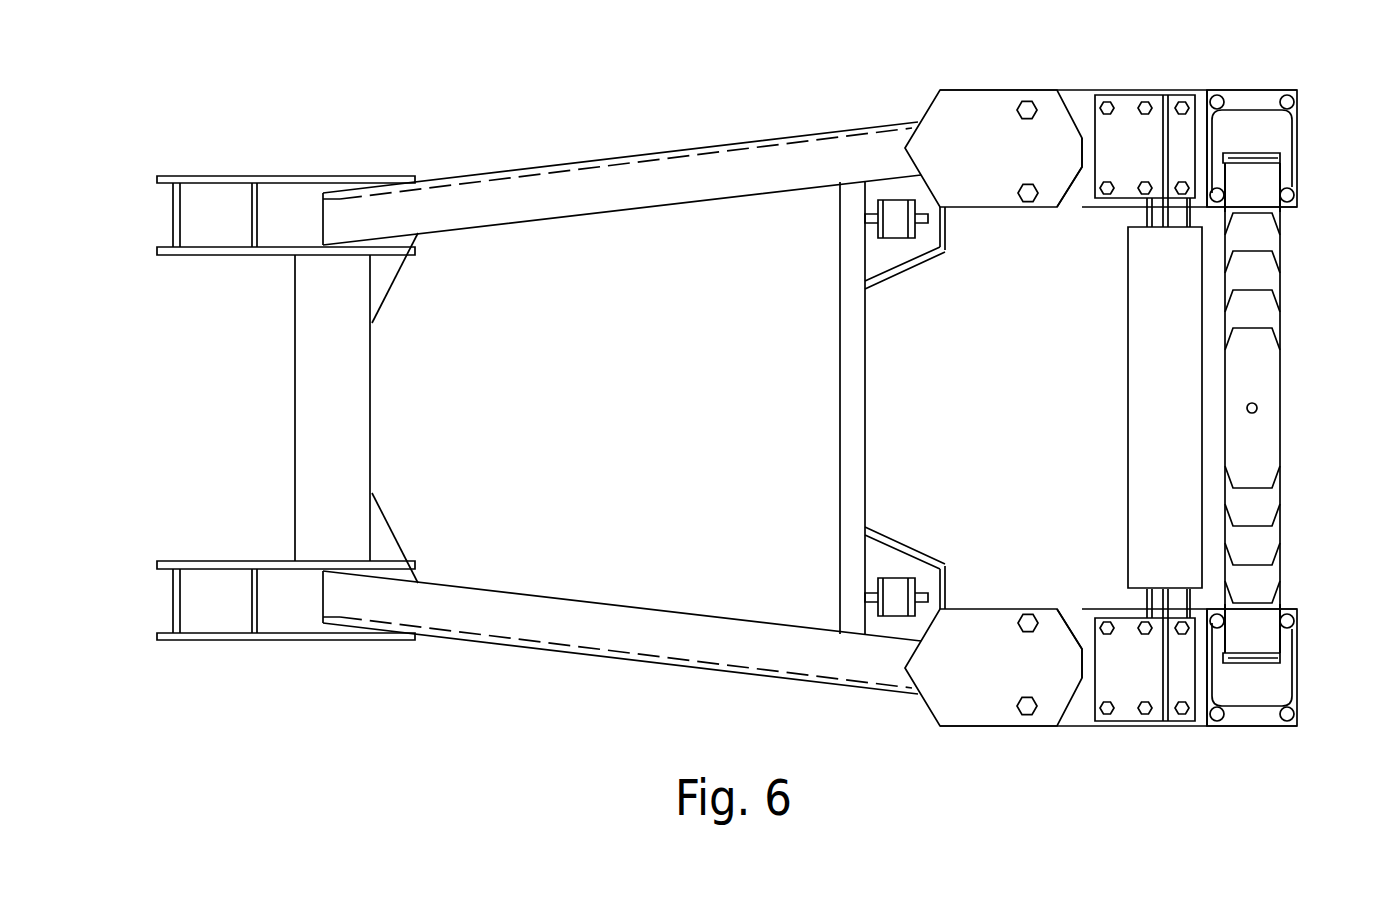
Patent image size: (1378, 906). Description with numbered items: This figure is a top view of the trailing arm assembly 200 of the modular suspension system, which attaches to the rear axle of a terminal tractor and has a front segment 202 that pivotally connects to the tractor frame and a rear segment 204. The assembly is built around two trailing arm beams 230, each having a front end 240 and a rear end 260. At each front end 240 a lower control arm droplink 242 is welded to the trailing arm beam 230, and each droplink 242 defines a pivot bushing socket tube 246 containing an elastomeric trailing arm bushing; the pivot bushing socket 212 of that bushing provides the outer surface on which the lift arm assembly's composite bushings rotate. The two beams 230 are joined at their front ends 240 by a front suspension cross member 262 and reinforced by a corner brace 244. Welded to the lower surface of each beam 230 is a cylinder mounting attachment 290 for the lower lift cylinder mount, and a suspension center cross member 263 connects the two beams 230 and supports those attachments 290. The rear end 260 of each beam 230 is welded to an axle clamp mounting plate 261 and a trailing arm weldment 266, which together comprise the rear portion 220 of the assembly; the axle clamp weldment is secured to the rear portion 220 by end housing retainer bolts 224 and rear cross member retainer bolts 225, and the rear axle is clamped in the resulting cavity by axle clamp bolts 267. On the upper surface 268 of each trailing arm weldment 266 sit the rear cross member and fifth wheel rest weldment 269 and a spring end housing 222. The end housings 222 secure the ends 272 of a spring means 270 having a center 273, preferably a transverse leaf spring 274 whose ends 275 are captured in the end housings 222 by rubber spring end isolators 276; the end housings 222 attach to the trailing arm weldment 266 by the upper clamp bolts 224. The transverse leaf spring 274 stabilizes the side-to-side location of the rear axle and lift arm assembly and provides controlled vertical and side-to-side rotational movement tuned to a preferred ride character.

The trailing arm assembly 200 is at (730, 416).
The front segment 202 is at (305, 210).
The rear segment 204 is at (1082, 103).
The pivot bushing socket 212 is at (200, 192).
The rear portion 220 is at (1202, 123).
The end housing 222 is at (1270, 125).
The end housing retainer bolts 224 is at (1218, 189).
The rear cross member retainer bolts 225 is at (1182, 181).
The trailing arm beam 230 is at (595, 187).
The front end 240 is at (343, 220).
The lower control arm droplink 242 is at (300, 197).
The corner brace 244 is at (382, 278).
The pivot bushing socket tube 246 is at (193, 213).
The rear end 260 is at (900, 128).
The axle clamp mounting plate 261 is at (948, 220).
The front suspension cross member 262 is at (310, 408).
The suspension center cross member 263 is at (850, 408).
The trailing arm weldment 266 is at (1003, 122).
The axle clamp bolts 267 is at (1028, 203).
The upper surface 268 is at (1082, 194).
The rear cross member and fifth wheel rest weldment 269 is at (1155, 408).
The spring means 270 is at (1262, 450).
The ends 272 is at (1263, 170).
The center 273 is at (1257, 408).
The transverse leaf spring 274 is at (1288, 534).
The ends 275 is at (1288, 408).
The rubber spring end isolators 276 is at (1267, 160).
The cylinder mounting attachment 290 is at (892, 227).